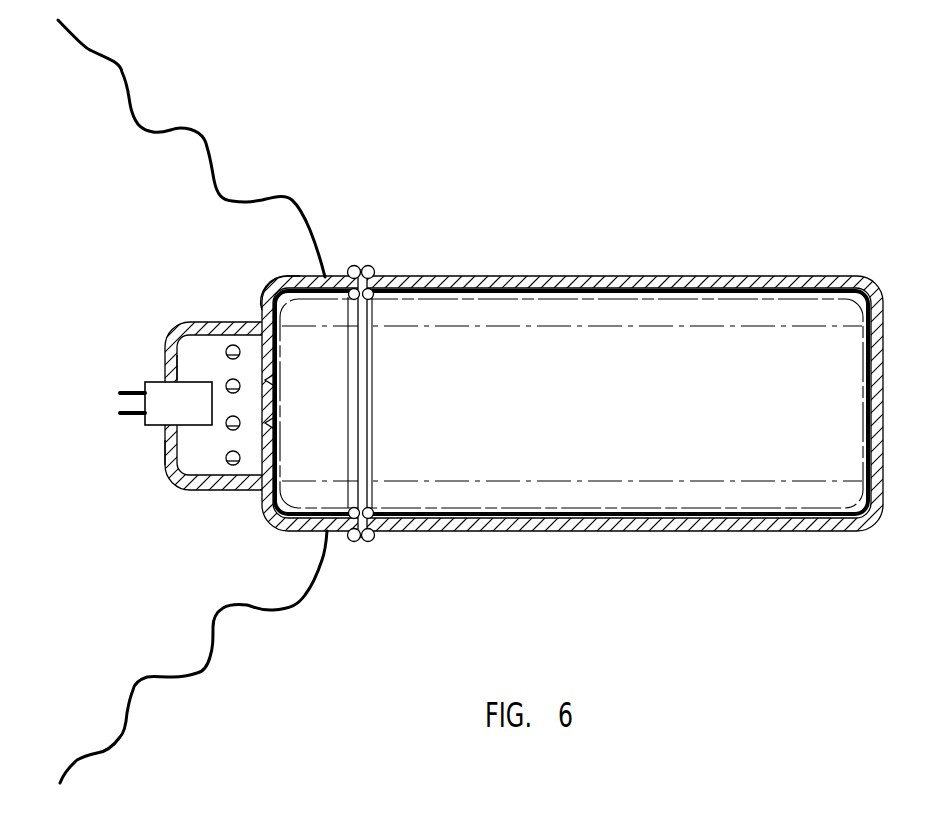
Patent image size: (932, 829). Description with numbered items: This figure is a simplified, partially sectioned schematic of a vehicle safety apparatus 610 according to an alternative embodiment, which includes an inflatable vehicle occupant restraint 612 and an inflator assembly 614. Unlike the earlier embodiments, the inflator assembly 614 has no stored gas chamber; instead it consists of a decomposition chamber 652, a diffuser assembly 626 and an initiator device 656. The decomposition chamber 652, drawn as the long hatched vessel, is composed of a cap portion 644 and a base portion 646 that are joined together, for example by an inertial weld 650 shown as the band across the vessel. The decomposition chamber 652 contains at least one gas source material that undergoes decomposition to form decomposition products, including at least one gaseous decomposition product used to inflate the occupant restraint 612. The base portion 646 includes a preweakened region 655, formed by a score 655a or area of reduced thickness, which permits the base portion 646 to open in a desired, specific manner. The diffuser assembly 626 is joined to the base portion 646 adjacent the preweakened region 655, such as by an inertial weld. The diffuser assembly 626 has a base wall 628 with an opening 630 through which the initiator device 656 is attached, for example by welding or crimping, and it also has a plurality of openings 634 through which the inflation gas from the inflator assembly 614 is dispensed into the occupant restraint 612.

The vehicle safety apparatus 610 is at (466, 346).
The inflatable vehicle occupant restraint 612 is at (180, 128).
The inflator assembly 614 is at (757, 320).
The diffuser assembly 626 is at (180, 330).
The base wall 628 is at (163, 450).
The opening 630 is at (168, 378).
The openings 634 is at (227, 424).
The cap portion 644 is at (483, 523).
The base portion 646 is at (292, 283).
The inertial weld 650 is at (363, 256).
The decomposition chamber 652 is at (680, 498).
The preweakened region 655 is at (273, 397).
The score 655a is at (266, 421).
The initiator device 656 is at (153, 415).